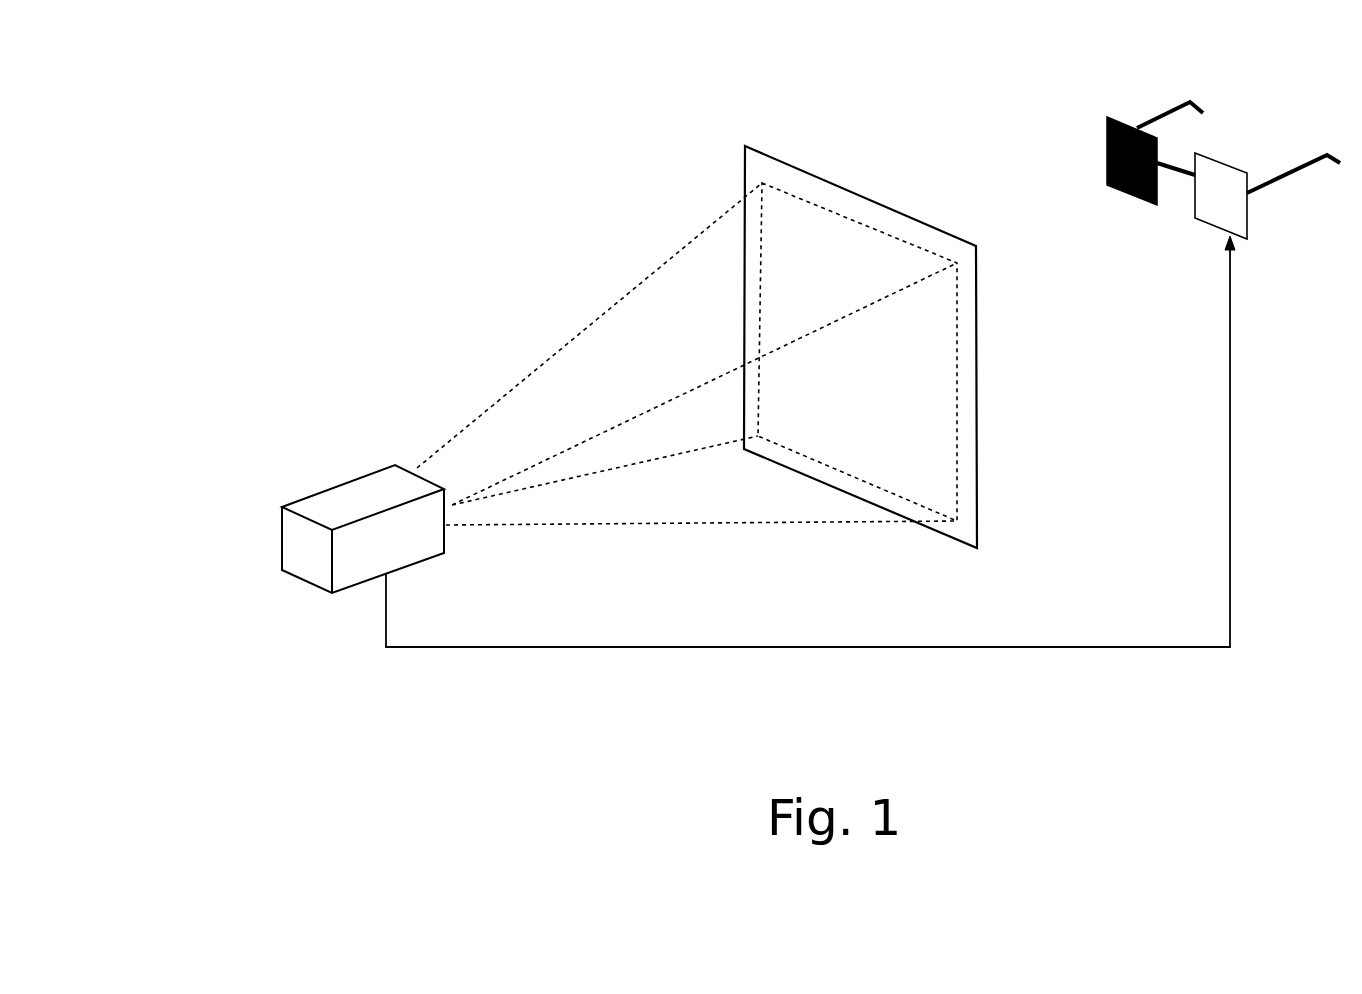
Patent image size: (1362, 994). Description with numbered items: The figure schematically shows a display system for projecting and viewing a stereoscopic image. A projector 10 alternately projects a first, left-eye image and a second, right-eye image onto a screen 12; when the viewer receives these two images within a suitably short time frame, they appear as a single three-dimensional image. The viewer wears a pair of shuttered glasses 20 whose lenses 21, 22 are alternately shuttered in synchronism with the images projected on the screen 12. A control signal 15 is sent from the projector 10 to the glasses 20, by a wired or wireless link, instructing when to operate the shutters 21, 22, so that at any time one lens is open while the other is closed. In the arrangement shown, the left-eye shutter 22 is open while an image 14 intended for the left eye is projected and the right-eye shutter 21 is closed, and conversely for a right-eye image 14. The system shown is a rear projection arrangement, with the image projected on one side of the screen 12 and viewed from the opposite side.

The projector 10 is at (282, 541).
The screen 12 is at (745, 171).
The image 14 is at (773, 227).
The control signal 15 is at (386, 638).
The shuttered glasses 20 is at (1197, 138).
The right-eye shutter 21 is at (1107, 148).
The left-eye shutter 22 is at (1247, 219).